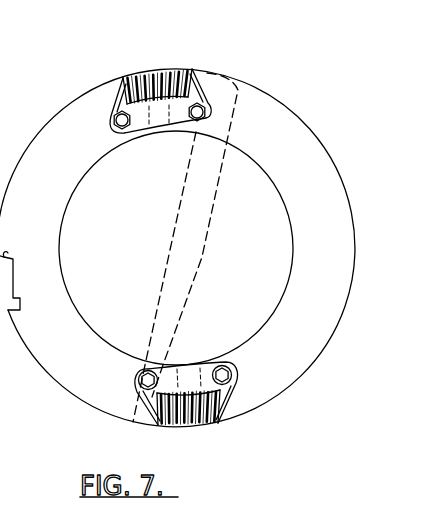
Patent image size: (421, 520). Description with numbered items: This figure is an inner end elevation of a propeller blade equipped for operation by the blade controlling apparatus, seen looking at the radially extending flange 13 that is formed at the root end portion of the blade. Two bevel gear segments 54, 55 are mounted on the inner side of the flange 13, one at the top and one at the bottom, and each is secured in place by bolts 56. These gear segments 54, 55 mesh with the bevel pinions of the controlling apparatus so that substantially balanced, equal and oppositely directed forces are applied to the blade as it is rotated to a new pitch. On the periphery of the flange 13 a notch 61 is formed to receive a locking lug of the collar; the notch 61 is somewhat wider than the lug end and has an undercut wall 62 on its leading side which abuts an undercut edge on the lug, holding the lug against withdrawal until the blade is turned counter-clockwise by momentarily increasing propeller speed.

The radially extending flange 13 is at (273, 122).
The gear segment 54 is at (129, 70).
The gear segment 55 is at (228, 413).
The bolt 56 is at (223, 362).
The notch 61 is at (14, 286).
The undercut wall 62 is at (5, 257).